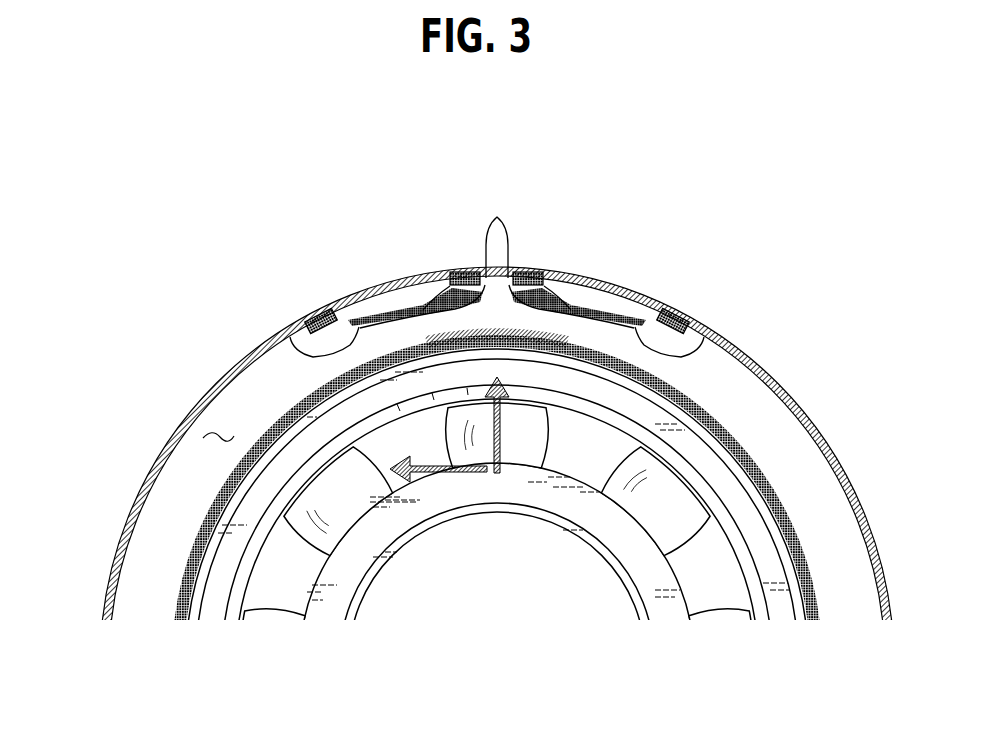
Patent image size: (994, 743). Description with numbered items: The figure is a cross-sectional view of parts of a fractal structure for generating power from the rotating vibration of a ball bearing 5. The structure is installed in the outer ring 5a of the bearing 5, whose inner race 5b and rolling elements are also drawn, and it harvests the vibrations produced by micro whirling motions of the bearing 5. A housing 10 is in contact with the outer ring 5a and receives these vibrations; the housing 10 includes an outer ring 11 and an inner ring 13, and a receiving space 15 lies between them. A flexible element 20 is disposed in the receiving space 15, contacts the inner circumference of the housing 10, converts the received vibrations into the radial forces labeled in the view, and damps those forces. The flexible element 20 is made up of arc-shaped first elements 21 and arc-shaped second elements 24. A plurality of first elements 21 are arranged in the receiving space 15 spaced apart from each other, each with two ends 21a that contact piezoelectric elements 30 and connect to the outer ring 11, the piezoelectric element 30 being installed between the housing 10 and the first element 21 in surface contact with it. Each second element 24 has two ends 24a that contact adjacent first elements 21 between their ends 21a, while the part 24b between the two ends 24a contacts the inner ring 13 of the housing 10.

The ball bearing 5 is at (708, 452).
The outer ring of the bearing 5a is at (737, 503).
The inner race 5b is at (653, 590).
The housing 10 is at (75, 387).
The outer ring of the housing 11 is at (190, 416).
The inner ring of the housing 13 is at (200, 515).
The receiving space 15 is at (222, 432).
The flexible element 20 is at (815, 296).
The first element 21 is at (290, 335).
The two ends of the first element 21a is at (354, 320).
The second element 24 is at (688, 366).
The two ends of the second element 24a is at (498, 235).
The part between the two ends of the second element 24b is at (503, 331).
The piezoelectric element 30 is at (461, 270).